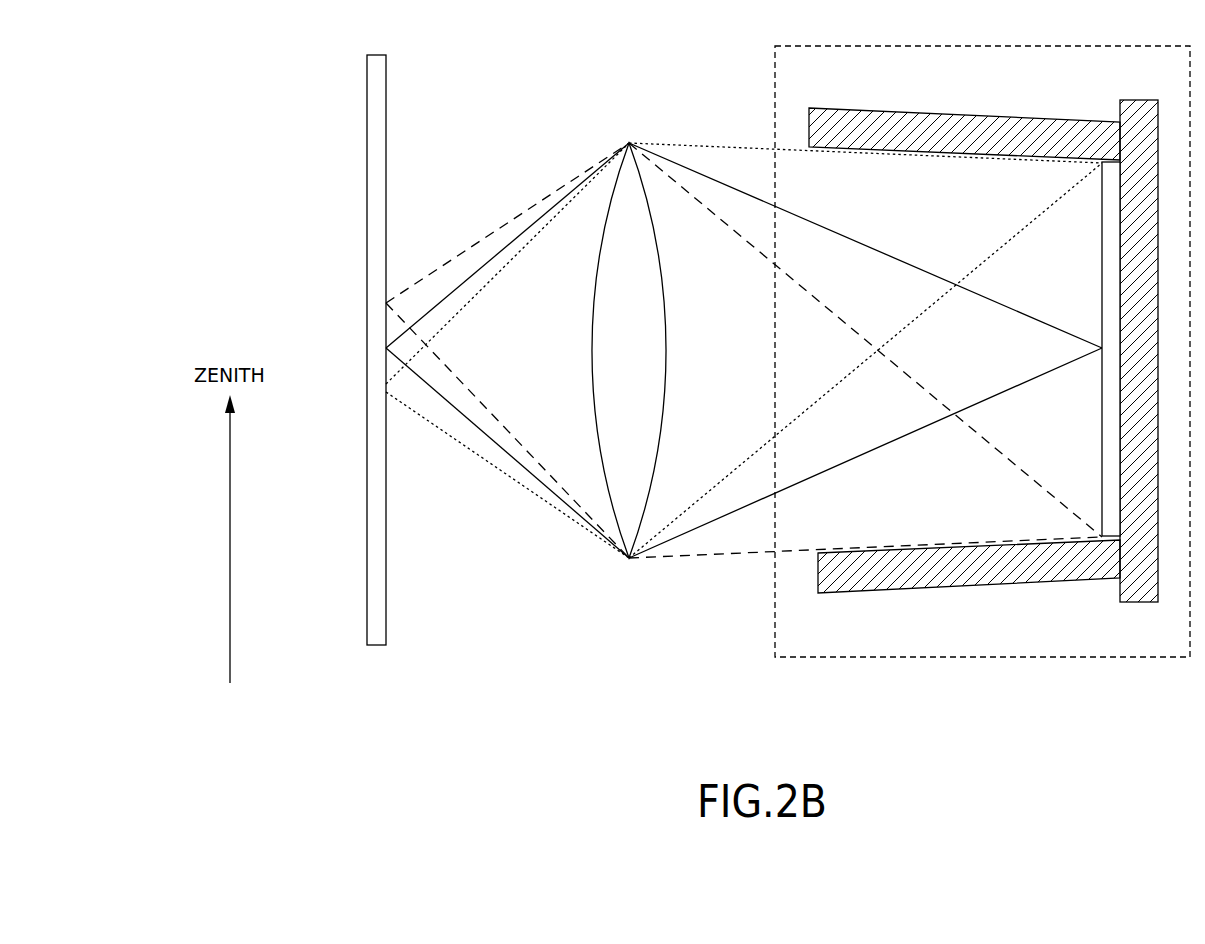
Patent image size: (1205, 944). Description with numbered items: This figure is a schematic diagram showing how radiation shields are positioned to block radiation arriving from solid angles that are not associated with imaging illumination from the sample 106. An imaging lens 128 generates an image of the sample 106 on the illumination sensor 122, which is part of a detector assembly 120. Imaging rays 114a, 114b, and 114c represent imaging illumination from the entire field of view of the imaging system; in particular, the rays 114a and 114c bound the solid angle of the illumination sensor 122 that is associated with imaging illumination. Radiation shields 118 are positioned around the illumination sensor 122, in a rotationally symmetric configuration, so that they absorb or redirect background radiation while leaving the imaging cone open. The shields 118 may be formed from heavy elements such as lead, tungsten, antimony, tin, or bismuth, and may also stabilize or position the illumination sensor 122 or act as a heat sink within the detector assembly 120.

The sample 106 is at (377, 647).
The imaging ray 114a is at (487, 238).
The imaging ray 114b is at (488, 440).
The imaging ray 114c is at (547, 502).
The radiation shield 118 is at (930, 108).
The detector assembly 120 is at (822, 651).
The illumination sensor 122 is at (1102, 425).
The imaging lens 128 is at (629, 562).